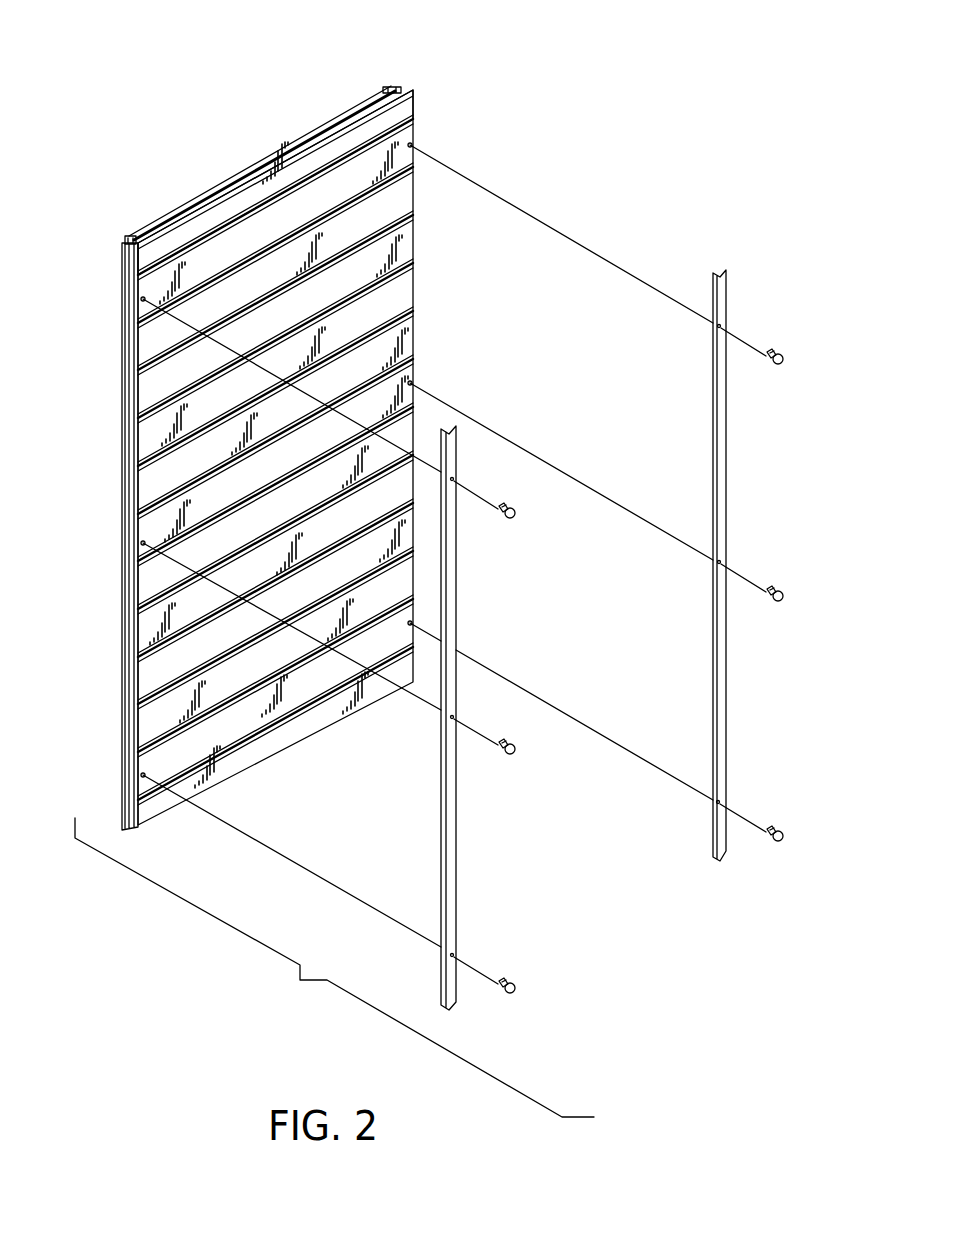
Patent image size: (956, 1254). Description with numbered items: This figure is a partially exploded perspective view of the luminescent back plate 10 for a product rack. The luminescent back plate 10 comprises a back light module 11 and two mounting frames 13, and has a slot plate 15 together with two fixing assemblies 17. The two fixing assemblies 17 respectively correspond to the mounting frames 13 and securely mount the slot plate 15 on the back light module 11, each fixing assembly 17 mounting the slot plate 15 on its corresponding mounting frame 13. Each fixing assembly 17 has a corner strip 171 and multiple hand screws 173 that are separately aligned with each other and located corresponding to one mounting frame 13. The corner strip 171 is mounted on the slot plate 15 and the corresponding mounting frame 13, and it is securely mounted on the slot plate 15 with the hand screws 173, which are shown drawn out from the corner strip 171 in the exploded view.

The luminescent back plate 10 is at (190, 117).
The back light module 11 is at (334, 118).
The mounting frame 13 is at (401, 85).
The slot plate 15 is at (404, 108).
The fixing assembly 17 is at (712, 276).
The corner strip 171 is at (722, 298).
The hand screw 173 is at (777, 368).